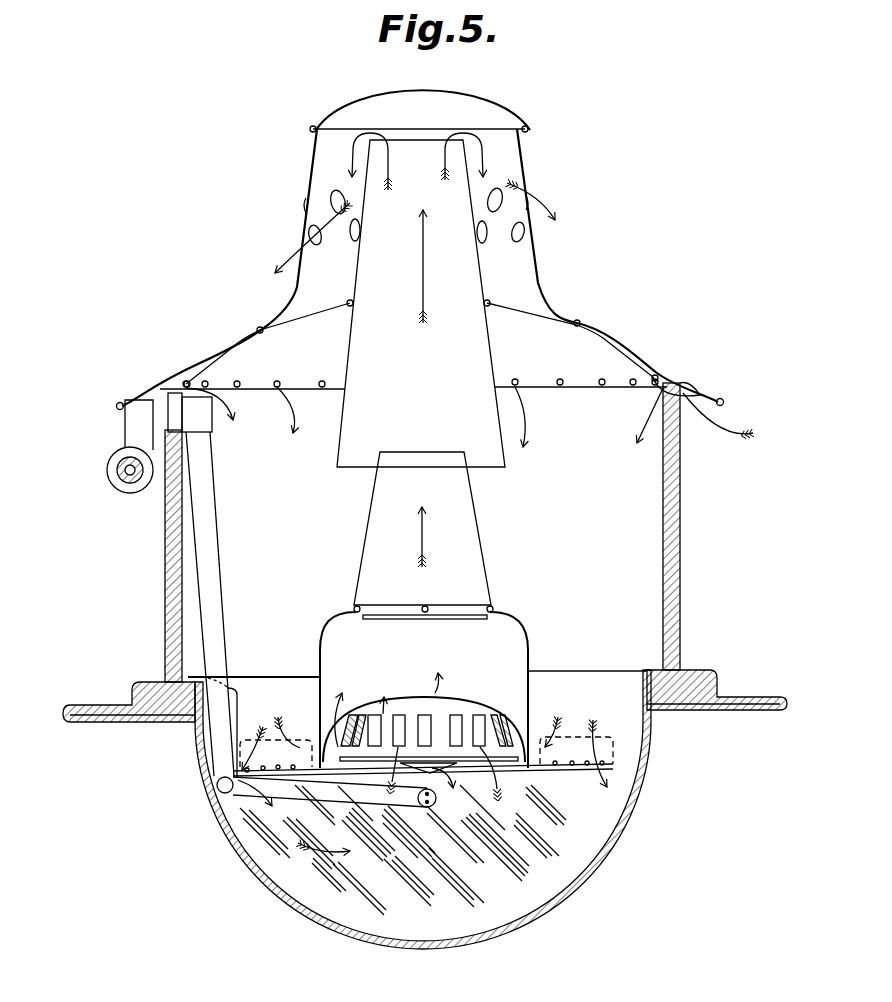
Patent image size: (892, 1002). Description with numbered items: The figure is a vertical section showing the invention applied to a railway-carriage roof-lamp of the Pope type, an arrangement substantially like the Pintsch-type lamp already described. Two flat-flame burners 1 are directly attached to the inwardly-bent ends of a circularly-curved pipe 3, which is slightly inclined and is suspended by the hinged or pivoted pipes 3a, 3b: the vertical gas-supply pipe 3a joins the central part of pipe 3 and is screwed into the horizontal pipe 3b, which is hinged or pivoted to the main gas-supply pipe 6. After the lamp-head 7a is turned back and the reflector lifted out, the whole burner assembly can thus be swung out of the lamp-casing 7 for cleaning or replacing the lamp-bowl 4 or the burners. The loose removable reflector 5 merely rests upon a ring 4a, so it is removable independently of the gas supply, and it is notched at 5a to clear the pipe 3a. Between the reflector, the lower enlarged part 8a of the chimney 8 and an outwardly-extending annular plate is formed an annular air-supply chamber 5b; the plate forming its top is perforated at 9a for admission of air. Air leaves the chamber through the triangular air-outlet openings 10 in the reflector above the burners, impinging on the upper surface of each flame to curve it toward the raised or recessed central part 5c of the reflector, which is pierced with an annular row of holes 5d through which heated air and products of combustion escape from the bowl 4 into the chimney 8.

The flat-flame burners 1 is at (437, 802).
The pipe 3 is at (330, 793).
The vertical gas-supply pipe 3a is at (215, 573).
The horizontal pipe 3b is at (162, 410).
The lamp-bowl 4 is at (423, 809).
The ring 4a is at (647, 672).
The reflector 5 is at (417, 730).
The notch 5a is at (230, 689).
The annular air-supply chamber 5b is at (426, 754).
The raised or recessed central part 5c is at (420, 698).
The holes 5d is at (452, 718).
The main gas-supply pipe 6 is at (122, 482).
The lamp-casing 7 is at (456, 491).
The lamp-head 7a is at (420, 249).
The chimney 8 is at (421, 376).
The lower enlarged part of the chimney 8a is at (424, 690).
The perforations 9a is at (312, 757).
The air-outlet openings 10 is at (420, 767).